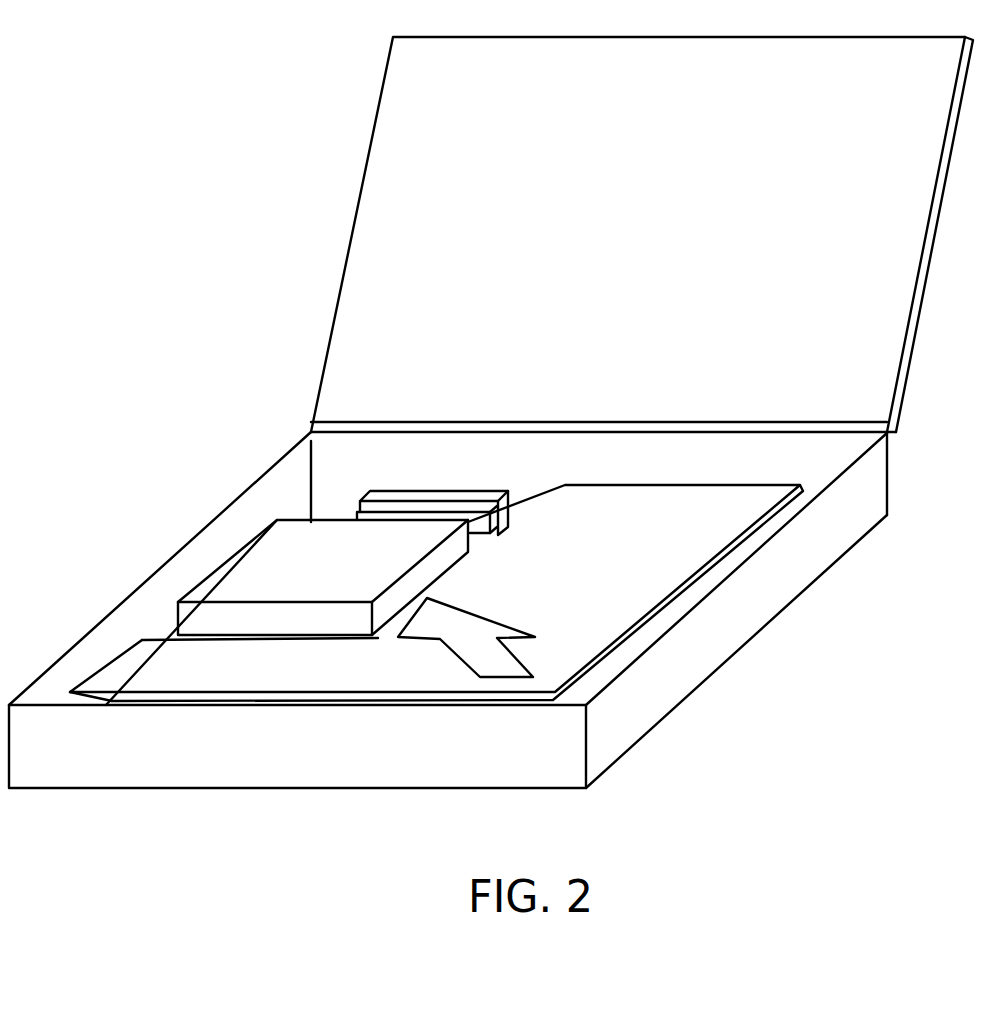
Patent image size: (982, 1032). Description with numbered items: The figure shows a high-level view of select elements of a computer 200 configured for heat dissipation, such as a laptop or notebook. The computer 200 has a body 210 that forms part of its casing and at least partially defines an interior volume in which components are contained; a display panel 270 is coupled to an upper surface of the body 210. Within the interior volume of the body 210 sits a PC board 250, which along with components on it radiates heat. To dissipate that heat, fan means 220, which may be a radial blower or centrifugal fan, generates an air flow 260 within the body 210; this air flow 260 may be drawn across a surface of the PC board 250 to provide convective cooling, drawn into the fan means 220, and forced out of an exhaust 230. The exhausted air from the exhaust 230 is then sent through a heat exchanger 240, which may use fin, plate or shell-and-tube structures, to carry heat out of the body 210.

The computer 200 is at (152, 303).
The body 210 is at (353, 759).
The fan means 220 is at (352, 593).
The exhaust 230 is at (449, 500).
The heat exchanger 240 is at (394, 476).
The printed circuit board 250 is at (610, 595).
The air flow 260 is at (490, 648).
The display panel 270 is at (878, 103).